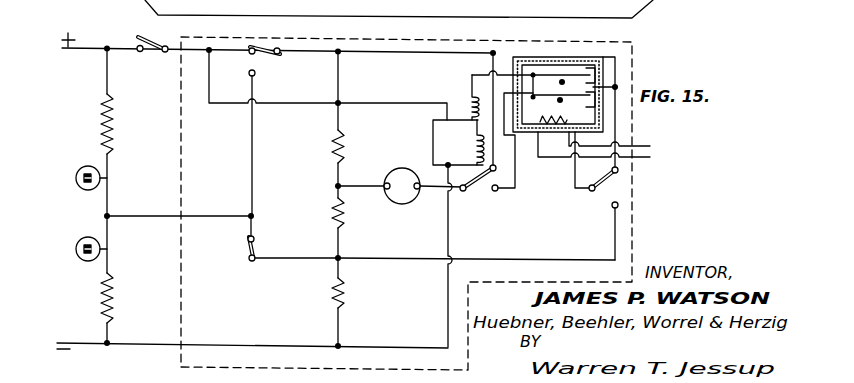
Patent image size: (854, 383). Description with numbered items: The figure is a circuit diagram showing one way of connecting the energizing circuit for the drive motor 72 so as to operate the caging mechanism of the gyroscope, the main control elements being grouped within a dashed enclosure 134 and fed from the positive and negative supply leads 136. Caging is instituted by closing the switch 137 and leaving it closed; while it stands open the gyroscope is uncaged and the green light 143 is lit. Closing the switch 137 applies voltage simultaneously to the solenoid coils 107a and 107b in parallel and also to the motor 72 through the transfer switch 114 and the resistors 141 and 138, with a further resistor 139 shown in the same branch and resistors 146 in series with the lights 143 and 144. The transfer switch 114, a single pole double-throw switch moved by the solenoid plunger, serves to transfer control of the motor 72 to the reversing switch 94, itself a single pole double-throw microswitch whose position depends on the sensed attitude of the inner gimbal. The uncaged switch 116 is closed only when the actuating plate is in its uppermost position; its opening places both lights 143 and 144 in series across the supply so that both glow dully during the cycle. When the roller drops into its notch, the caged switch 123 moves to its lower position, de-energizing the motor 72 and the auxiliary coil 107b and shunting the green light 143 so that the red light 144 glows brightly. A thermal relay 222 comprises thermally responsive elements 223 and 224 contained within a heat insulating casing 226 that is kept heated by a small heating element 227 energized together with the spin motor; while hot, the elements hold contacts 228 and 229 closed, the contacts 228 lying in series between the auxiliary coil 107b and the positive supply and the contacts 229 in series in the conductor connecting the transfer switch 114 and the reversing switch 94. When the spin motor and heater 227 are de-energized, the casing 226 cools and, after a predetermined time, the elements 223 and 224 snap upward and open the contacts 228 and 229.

The drive motor 72 is at (404, 168).
The reversing microswitch 94 is at (605, 190).
The solenoid coil 107a is at (462, 142).
The auxiliary solenoid coil 107b is at (467, 105).
The transfer switch 114 is at (478, 186).
The uncaged switch 116 is at (247, 242).
The caged switch 123 is at (262, 60).
The control circuit enclosure 134 is at (181, 167).
The supply leads 136 is at (125, 47).
The switch 137 is at (151, 46).
The resistor 138 is at (332, 289).
The resistor 139 is at (332, 146).
The resistor 141 is at (332, 208).
The green signal light 143 is at (77, 174).
The red light 144 is at (77, 248).
The resistor 146 is at (99, 117).
The thermal relay 222 is at (583, 53).
The thermally responsive element 223 is at (543, 74).
The thermally responsive element 224 is at (539, 104).
The heat insulating casing 226 is at (598, 68).
The heating element 227 is at (552, 125).
The contacts 228 is at (562, 82).
The contacts 229 is at (562, 100).